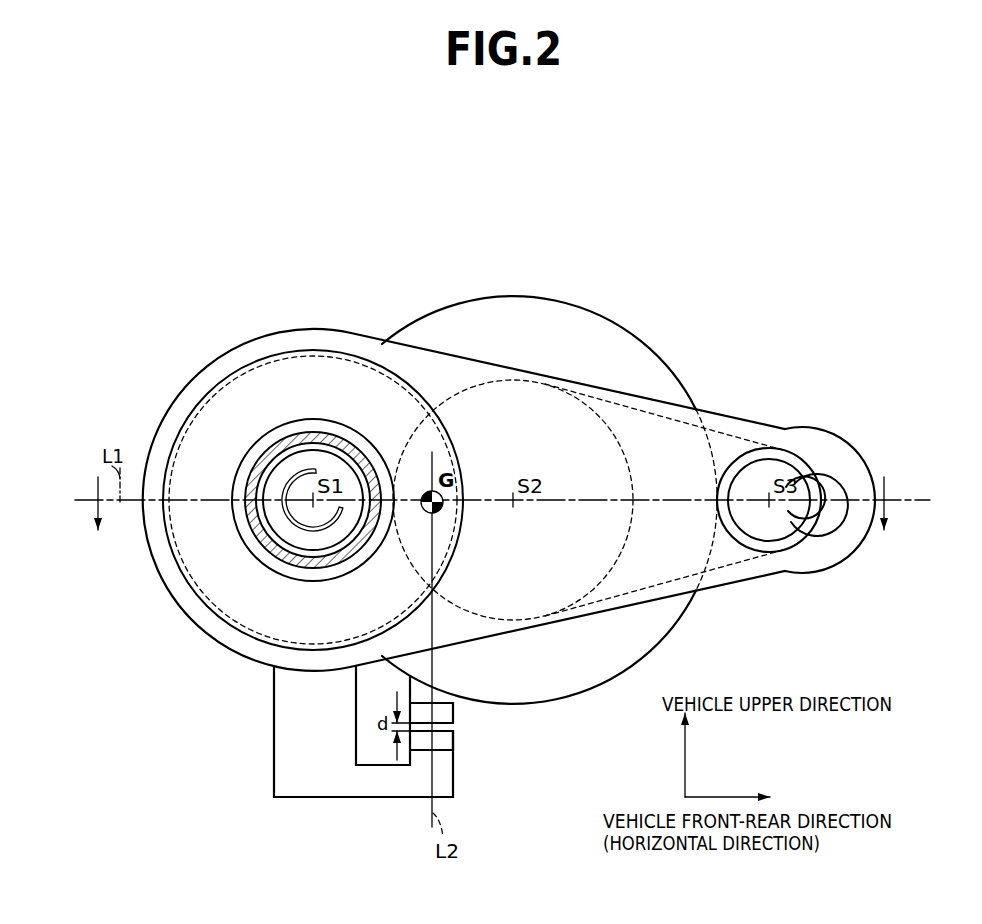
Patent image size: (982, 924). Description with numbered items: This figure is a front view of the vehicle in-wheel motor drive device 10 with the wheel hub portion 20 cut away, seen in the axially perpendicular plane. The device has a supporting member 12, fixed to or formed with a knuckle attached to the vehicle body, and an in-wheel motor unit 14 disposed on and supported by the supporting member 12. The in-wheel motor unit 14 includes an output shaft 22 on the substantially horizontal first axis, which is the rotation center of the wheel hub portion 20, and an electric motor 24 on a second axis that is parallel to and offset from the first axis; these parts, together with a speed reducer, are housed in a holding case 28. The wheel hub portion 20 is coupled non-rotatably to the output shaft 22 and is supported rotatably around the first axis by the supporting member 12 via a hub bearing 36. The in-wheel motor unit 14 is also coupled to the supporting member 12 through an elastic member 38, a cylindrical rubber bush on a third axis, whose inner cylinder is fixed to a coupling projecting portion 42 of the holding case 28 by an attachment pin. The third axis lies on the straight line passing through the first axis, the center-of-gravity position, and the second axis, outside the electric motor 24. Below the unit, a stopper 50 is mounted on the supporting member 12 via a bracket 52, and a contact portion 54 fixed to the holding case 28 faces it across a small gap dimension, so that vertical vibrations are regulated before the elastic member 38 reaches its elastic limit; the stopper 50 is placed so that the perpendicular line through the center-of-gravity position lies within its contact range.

The vehicle in-wheel motor drive device 10 is at (708, 258).
The supporting member 12 is at (660, 420).
The in-wheel motor unit 14 is at (363, 297).
The wheel hub portion 20 is at (307, 430).
The output shaft 22 is at (300, 490).
The electric motor 24 is at (553, 293).
The holding case 28 is at (503, 312).
The hub bearing 36 is at (200, 592).
The elastic member 38 is at (784, 462).
The coupling projecting portion 42 is at (700, 590).
The stopper 50 is at (445, 741).
The bracket 52 is at (342, 778).
The contact portion 54 is at (444, 715).